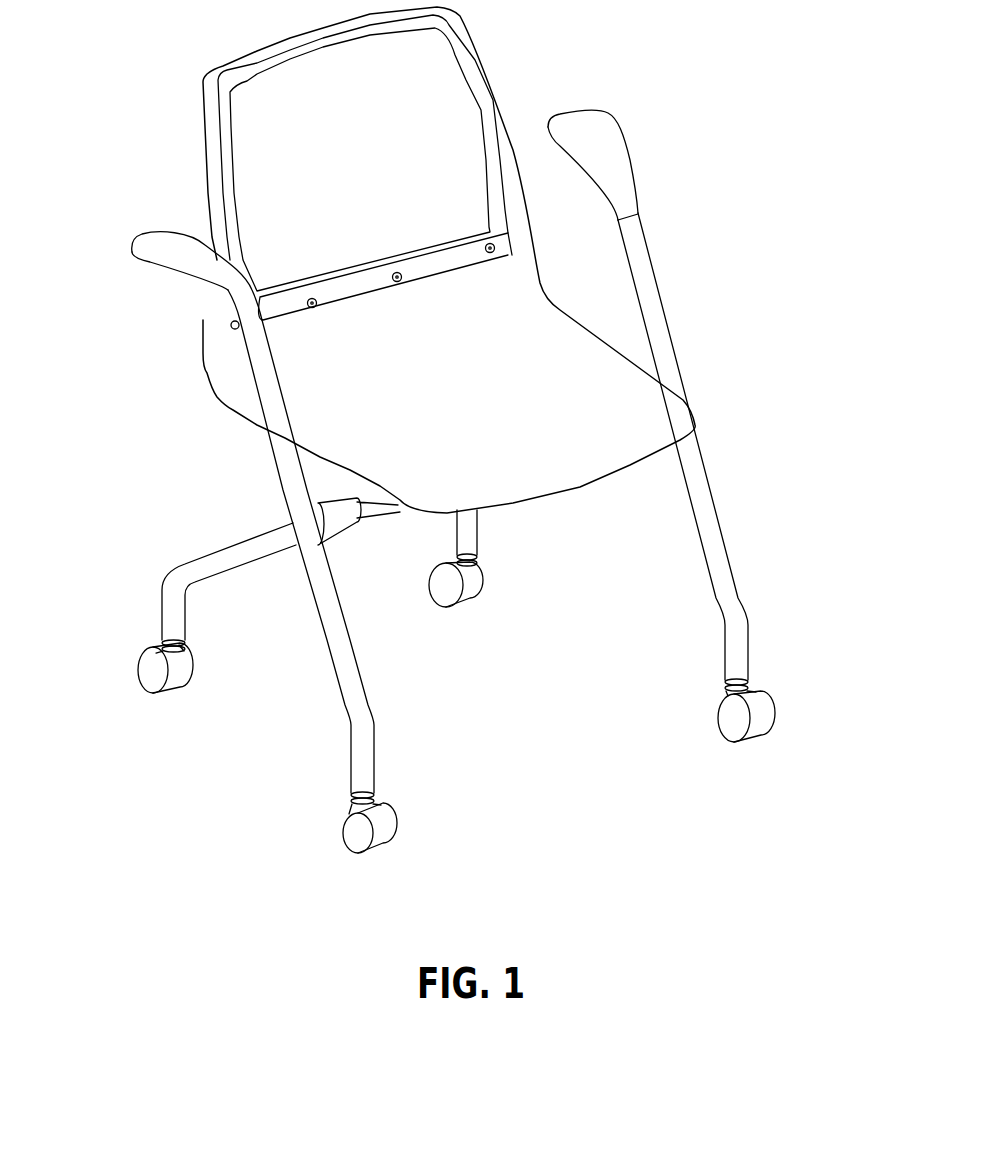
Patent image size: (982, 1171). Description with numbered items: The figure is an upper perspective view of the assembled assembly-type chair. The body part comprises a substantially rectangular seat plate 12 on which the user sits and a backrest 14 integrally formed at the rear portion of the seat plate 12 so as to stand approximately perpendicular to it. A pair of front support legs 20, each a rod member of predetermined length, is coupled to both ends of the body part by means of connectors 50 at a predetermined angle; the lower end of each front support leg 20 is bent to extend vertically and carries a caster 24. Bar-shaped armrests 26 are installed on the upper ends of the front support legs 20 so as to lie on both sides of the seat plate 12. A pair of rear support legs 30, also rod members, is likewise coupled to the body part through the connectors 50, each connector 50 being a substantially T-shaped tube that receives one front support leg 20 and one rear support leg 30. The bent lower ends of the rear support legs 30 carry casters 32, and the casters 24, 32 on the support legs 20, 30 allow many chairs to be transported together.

The seat plate 12 is at (623, 373).
The backrest 14 is at (463, 67).
The front support leg 20 is at (352, 678).
The caster 24 is at (353, 830).
The armrest 26 is at (168, 245).
The rear support leg 30 is at (235, 565).
The caster 32 is at (147, 670).
The connector 50 is at (333, 537).